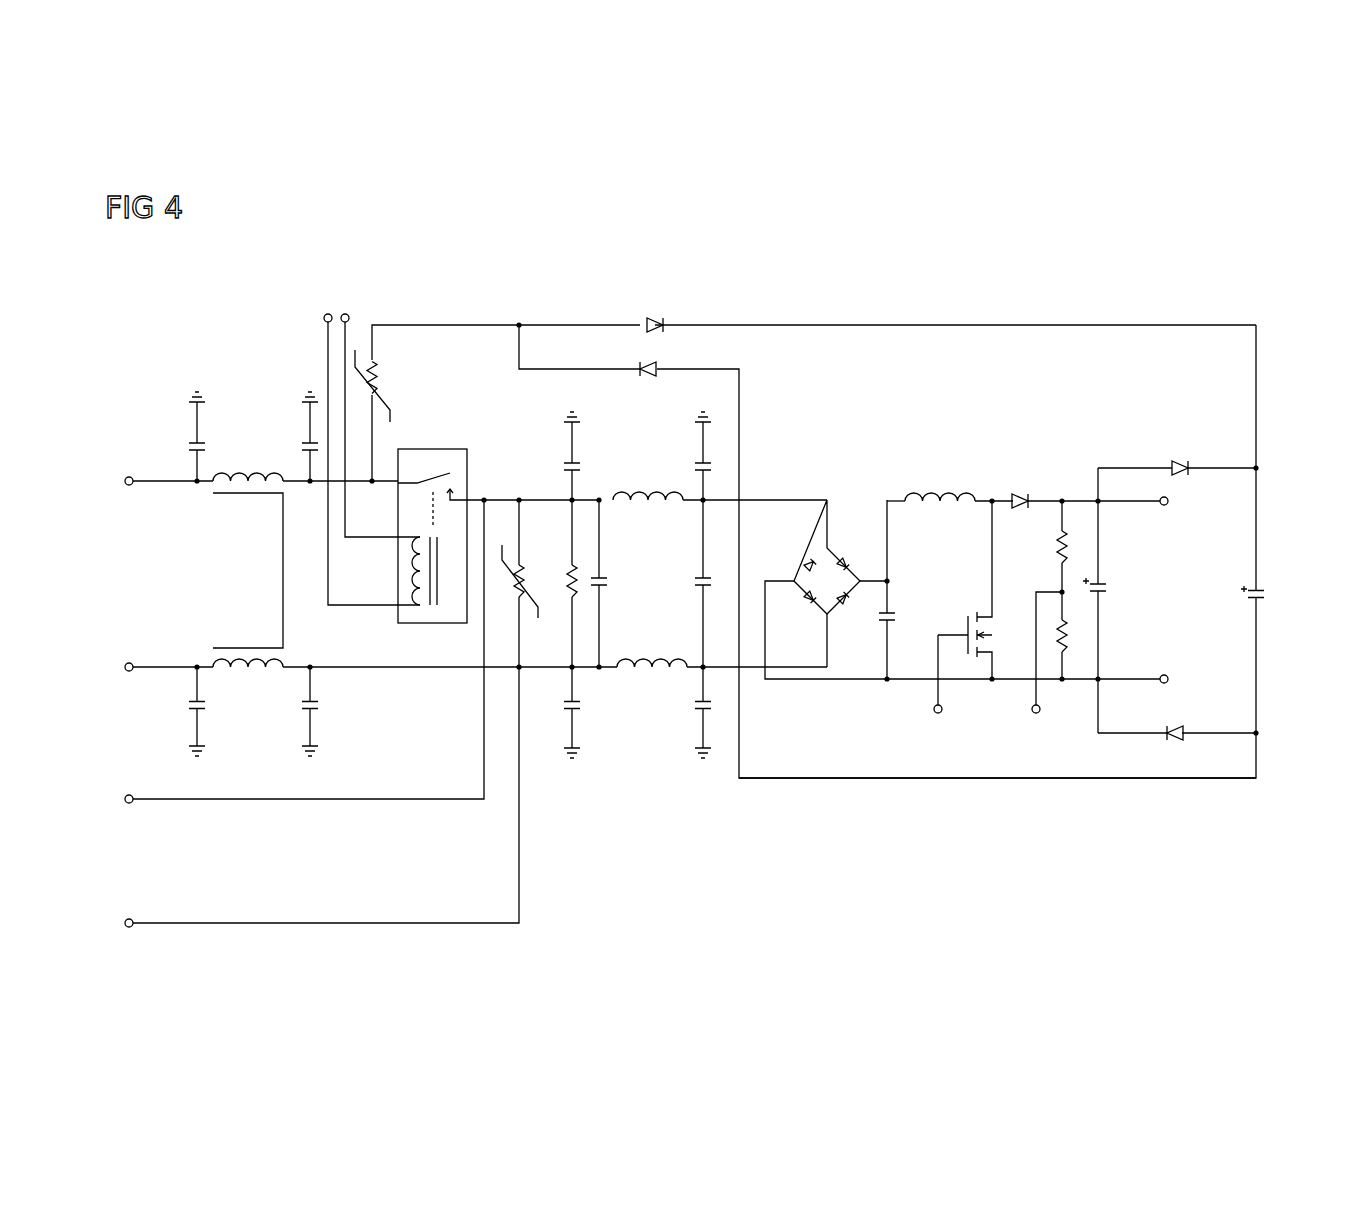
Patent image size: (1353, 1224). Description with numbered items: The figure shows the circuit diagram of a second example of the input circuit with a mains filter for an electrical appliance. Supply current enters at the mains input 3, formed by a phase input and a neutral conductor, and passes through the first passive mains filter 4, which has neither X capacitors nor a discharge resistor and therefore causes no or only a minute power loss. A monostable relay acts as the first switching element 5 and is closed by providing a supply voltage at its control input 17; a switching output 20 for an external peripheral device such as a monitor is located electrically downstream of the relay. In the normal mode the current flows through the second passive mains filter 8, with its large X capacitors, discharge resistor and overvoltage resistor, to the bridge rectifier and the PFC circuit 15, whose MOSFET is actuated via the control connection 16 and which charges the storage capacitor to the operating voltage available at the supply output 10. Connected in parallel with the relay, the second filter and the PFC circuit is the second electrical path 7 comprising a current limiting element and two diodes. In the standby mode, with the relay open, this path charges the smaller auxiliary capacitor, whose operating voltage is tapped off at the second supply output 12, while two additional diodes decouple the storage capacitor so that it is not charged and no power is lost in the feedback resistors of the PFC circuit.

The mains input 3 is at (120, 572).
The first passive mains filter 4 is at (393, 713).
The first switching element 5 is at (478, 425).
The second electrical path 7 is at (580, 290).
The second passive mains filter 8 is at (612, 816).
The supply output 10 is at (1168, 562).
The second supply output 12 is at (1280, 655).
The PFC circuit 15 is at (843, 807).
The control connection 16 is at (940, 768).
The control input 17 is at (295, 333).
The switching output 20 is at (120, 868).